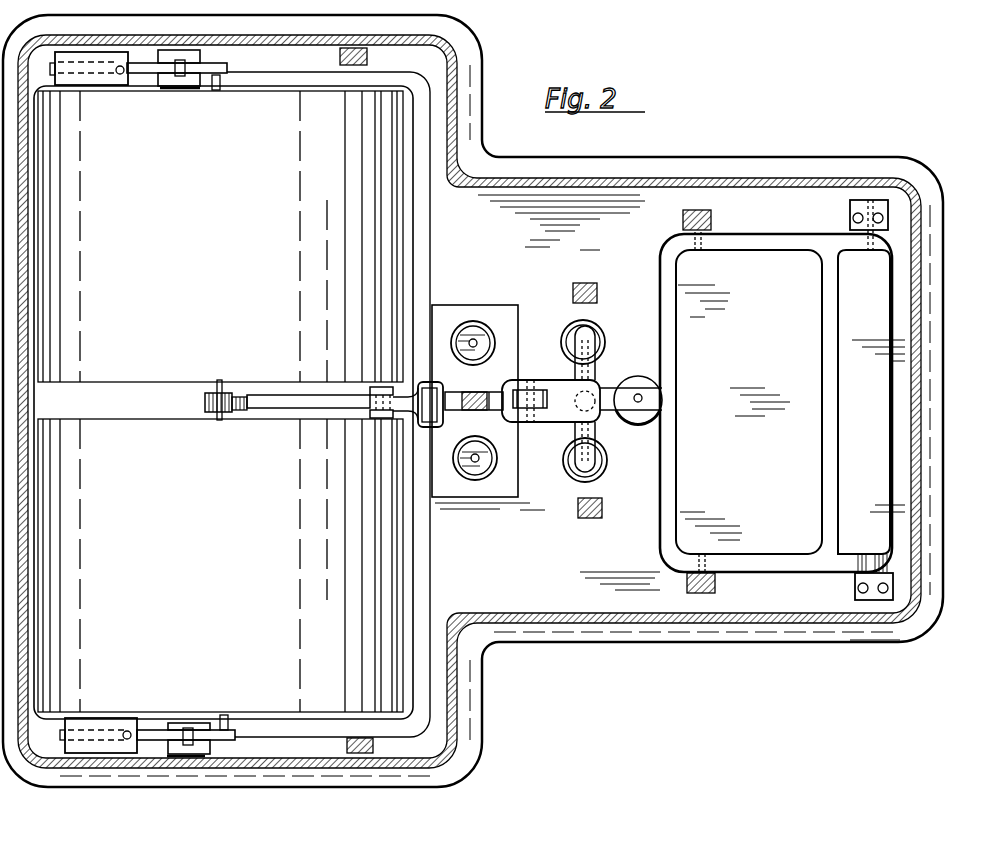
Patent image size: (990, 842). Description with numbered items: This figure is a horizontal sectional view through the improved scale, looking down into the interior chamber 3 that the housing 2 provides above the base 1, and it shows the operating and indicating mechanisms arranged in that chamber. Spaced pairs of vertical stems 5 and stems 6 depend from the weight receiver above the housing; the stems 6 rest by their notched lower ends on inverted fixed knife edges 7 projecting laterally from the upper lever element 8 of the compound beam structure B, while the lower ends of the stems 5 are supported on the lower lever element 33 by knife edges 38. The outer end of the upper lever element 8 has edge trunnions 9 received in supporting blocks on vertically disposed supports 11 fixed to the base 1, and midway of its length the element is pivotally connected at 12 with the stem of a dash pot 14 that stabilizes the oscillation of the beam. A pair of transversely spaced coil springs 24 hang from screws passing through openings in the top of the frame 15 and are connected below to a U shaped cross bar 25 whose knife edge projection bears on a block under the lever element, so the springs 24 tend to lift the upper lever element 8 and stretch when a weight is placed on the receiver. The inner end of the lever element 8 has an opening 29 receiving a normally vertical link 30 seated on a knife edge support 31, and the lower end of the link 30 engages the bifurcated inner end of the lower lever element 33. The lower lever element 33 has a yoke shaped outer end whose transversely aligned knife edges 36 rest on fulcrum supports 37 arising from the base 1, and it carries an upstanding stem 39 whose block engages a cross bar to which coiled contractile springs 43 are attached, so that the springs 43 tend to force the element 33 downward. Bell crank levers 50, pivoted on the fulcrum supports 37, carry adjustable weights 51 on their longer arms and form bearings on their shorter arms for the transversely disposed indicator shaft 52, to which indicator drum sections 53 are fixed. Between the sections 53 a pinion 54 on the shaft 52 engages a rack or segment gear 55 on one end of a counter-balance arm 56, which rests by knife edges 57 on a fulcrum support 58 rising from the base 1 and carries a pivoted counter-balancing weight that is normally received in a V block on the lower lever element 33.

The base 1 is at (505, 588).
The housing 2 is at (467, 703).
The interior chamber 3 is at (550, 600).
The vertical stems 5 is at (330, 72).
The vertical stems 6 is at (712, 218).
The inverted fixed knife edges 7 is at (683, 235).
The upper lever element 8 is at (667, 438).
The edge trunnions 9 is at (887, 230).
The vertically disposed supports 11 is at (850, 212).
The pivotal connection 12 is at (647, 397).
The dash pot 14 is at (665, 412).
The frame 15 is at (581, 519).
The coil springs 24 is at (603, 338).
The U shaped cross bar 25 is at (596, 373).
The opening 29 is at (543, 390).
The link 30 is at (503, 383).
The knife edge support 31 is at (535, 420).
The lower lever element 33 is at (423, 232).
The knife edges 36 is at (185, 76).
The fulcrum supports 37 is at (187, 50).
The knife edges 38 is at (367, 60).
The upstanding stem 39 is at (464, 410).
The coiled contractile springs 43 is at (462, 325).
The bell crank levers 50 is at (152, 74).
The adjustable weights 51 is at (100, 82).
The indicator shaft 52 is at (219, 420).
The indicator drum sections 53 is at (220, 401).
The pinion 54 is at (207, 396).
The rack or segment gear 55 is at (238, 397).
The counter-balance arm 56 is at (310, 406).
The knife edges 57 is at (377, 418).
The fulcrum support 58 is at (372, 387).
The compound beam structure B is at (596, 410).